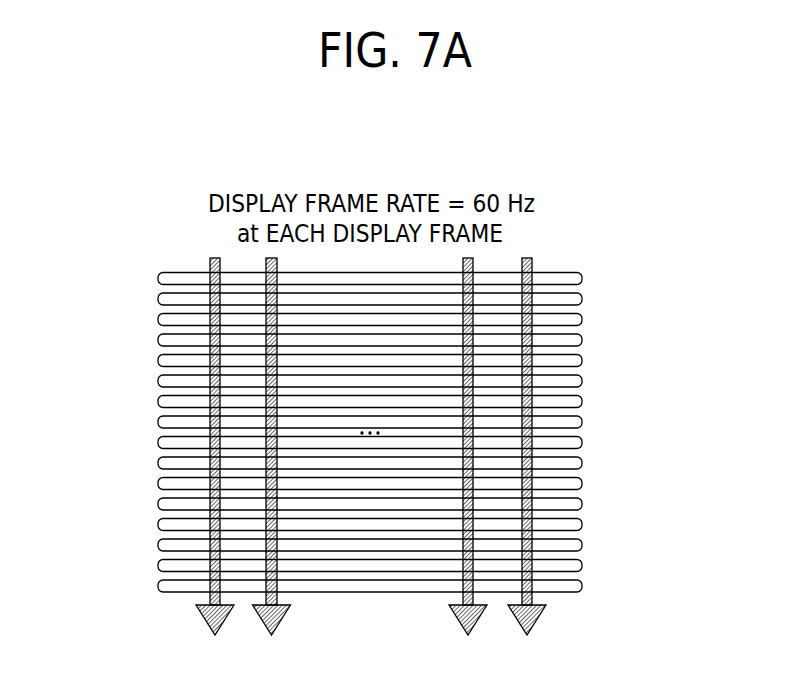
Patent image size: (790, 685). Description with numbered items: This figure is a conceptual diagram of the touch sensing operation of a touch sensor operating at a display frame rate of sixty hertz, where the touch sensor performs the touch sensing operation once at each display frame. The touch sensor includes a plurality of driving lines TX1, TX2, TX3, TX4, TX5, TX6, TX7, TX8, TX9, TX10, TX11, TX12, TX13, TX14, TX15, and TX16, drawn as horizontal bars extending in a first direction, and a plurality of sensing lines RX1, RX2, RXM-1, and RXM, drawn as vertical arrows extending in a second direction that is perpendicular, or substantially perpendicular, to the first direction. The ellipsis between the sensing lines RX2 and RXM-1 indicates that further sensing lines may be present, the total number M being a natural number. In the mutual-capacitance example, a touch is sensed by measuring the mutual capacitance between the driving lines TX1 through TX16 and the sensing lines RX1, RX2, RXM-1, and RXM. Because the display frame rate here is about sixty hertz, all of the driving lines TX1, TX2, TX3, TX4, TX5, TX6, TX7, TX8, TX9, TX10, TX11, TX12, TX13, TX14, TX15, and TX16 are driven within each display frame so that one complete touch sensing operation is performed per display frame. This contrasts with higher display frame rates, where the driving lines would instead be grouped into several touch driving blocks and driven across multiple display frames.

The driving line TX1 is at (158, 278).
The driving line TX2 is at (582, 299).
The driving line TX3 is at (158, 320).
The driving line TX4 is at (582, 340).
The driving line TX5 is at (158, 360).
The driving line TX6 is at (582, 381).
The driving line TX7 is at (158, 402).
The driving line TX8 is at (582, 422).
The driving line TX9 is at (158, 442).
The driving line TX10 is at (582, 463).
The driving line TX11 is at (158, 484).
The driving line TX12 is at (582, 504).
The driving line TX13 is at (158, 524).
The driving line TX14 is at (582, 545).
The driving line TX15 is at (158, 566).
The driving line TX16 is at (582, 586).
The sensing line RX1 is at (207, 625).
The sensing line RX2 is at (282, 625).
The sensing line RXM-1 is at (455, 621).
The sensing line RXM is at (537, 621).